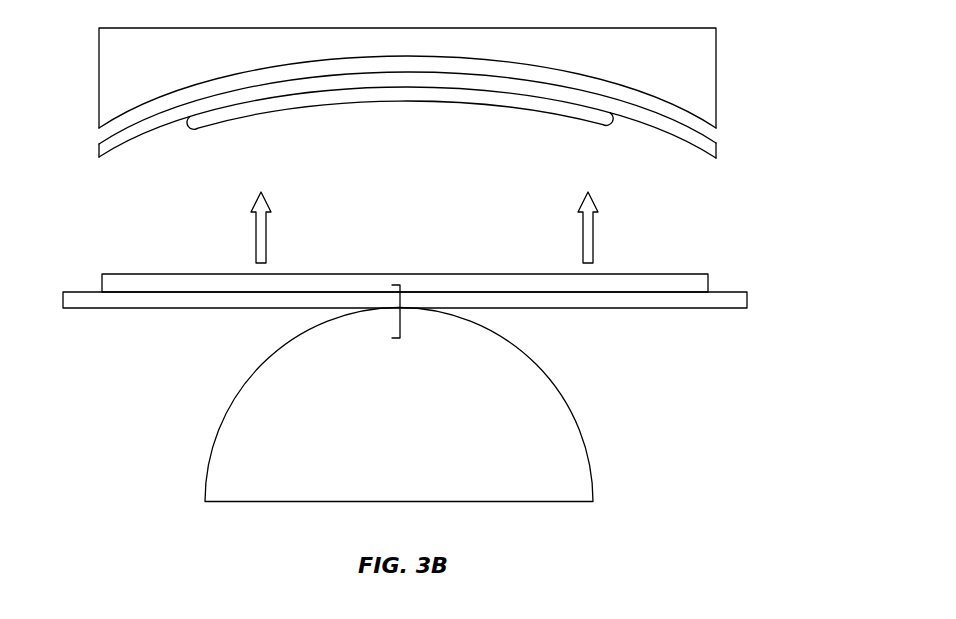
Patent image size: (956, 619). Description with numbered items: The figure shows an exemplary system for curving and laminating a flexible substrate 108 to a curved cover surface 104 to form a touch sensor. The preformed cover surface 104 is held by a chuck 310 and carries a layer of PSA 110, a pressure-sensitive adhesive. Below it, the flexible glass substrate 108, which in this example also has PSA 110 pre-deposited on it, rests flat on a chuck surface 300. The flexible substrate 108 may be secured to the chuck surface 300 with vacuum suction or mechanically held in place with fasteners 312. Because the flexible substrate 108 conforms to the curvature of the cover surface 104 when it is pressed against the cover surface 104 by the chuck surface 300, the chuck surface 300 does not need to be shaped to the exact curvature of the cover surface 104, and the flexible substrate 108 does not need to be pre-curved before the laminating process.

The chuck 310 is at (130, 28).
The cover surface 104 is at (716, 151).
The PSA 110 is at (588, 121).
The flexible substrate 108 is at (735, 292).
The fasteners 312 is at (404, 331).
The chuck surface 300 is at (570, 405).